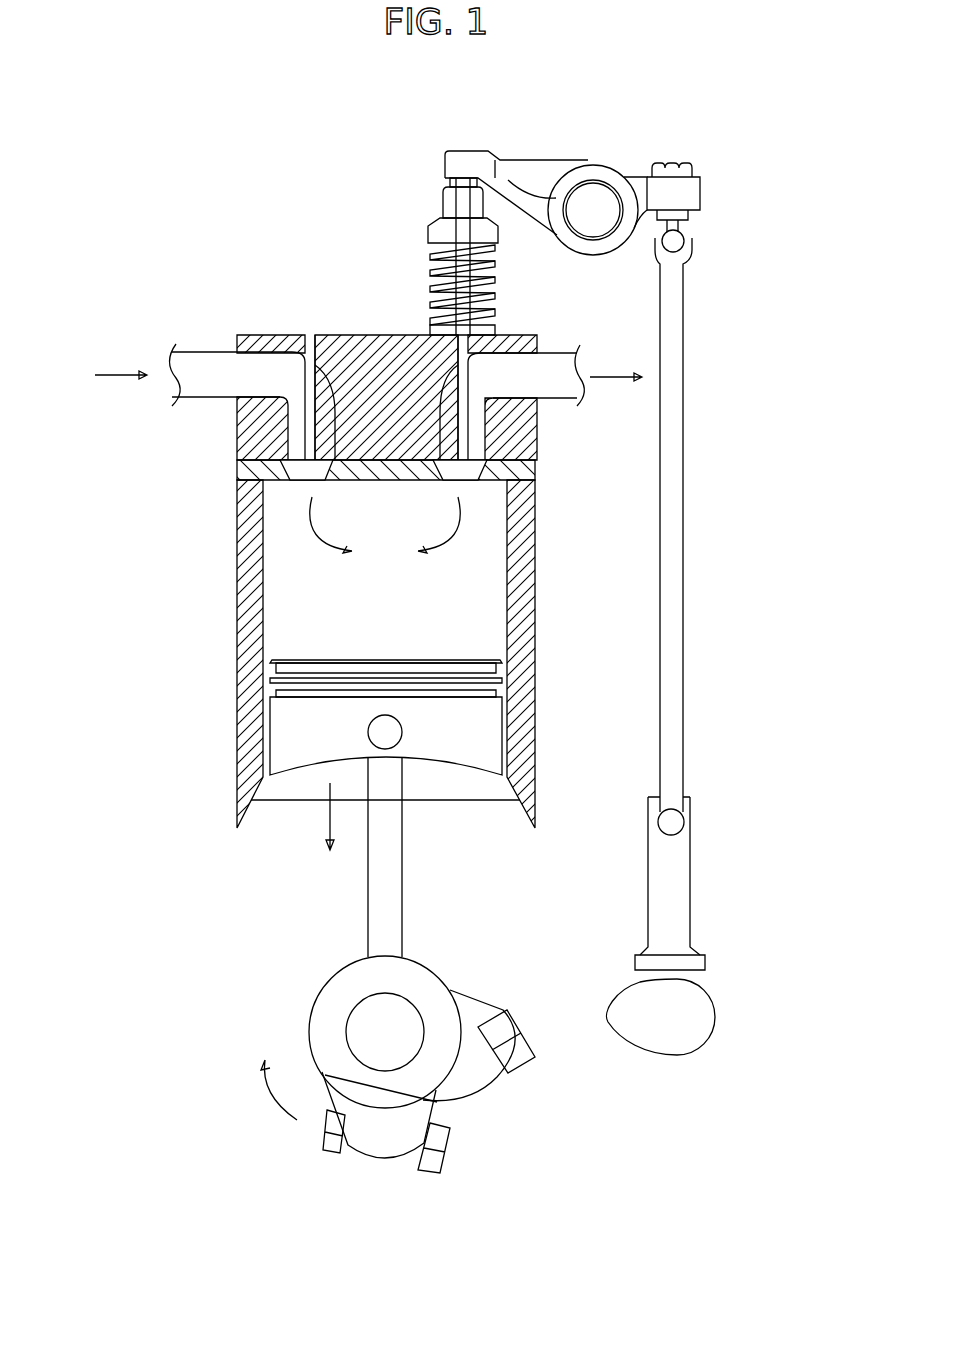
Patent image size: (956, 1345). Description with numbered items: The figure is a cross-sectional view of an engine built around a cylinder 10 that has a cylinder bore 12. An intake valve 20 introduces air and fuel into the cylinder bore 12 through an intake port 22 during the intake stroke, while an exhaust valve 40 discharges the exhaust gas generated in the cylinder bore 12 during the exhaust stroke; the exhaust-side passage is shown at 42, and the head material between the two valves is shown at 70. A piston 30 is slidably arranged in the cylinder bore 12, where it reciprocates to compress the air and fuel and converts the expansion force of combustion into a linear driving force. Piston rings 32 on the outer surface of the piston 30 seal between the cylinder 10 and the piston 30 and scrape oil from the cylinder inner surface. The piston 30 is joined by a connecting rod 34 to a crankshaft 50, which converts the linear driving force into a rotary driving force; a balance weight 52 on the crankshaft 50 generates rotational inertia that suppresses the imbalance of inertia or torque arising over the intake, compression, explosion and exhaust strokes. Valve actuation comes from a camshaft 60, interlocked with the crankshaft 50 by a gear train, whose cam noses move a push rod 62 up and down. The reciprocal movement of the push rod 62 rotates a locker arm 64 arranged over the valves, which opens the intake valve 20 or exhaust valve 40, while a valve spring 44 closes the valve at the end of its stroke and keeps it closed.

The cylinder 10 is at (248, 578).
The cylinder bore 12 is at (286, 621).
The intake valve 20 is at (305, 445).
The intake port 22 is at (206, 348).
The piston 30 is at (283, 733).
The piston rings 32 is at (283, 690).
The connecting rod 34 is at (400, 903).
The exhaust valve 40 is at (470, 440).
The exhaust port 42 is at (557, 350).
The valve spring 44 is at (490, 268).
The crankshaft 50 is at (325, 1003).
The balance weight 52 is at (385, 1150).
The camshaft 60 is at (710, 1015).
The push rod 62 is at (684, 530).
The locker arm 64 is at (508, 185).
The cylinder head 70 is at (366, 345).